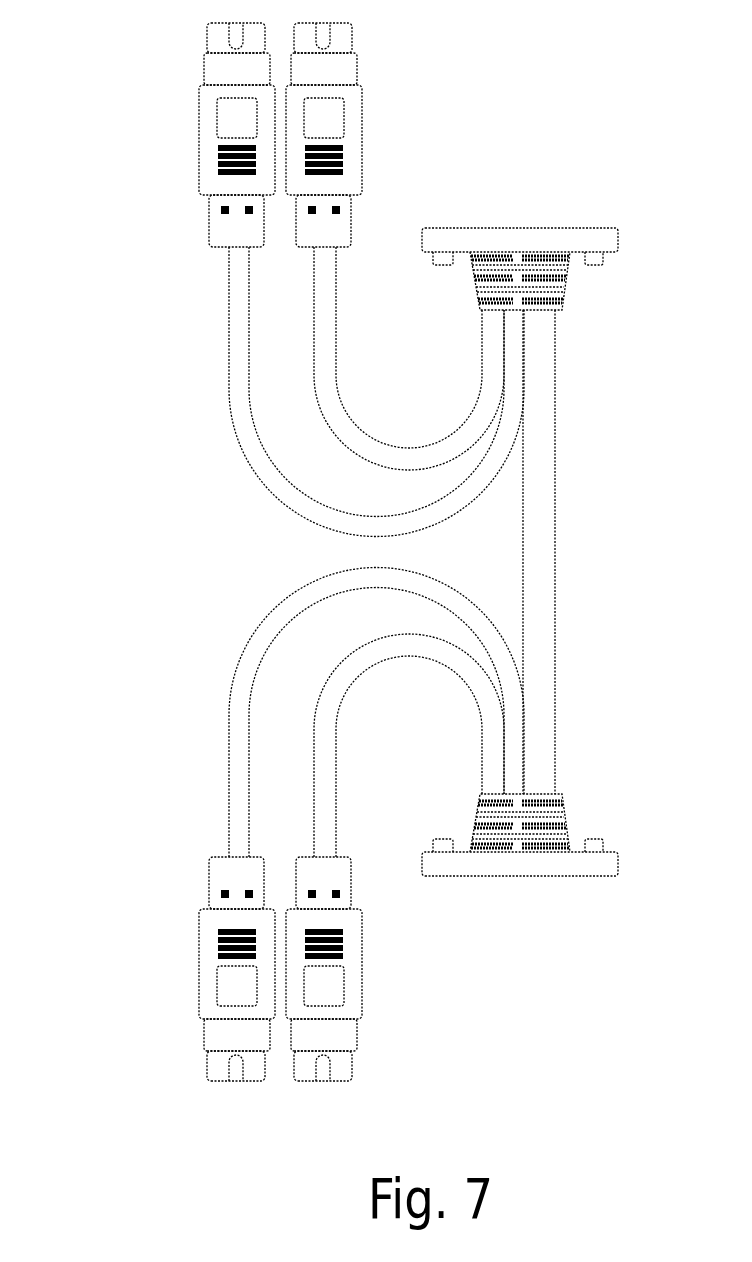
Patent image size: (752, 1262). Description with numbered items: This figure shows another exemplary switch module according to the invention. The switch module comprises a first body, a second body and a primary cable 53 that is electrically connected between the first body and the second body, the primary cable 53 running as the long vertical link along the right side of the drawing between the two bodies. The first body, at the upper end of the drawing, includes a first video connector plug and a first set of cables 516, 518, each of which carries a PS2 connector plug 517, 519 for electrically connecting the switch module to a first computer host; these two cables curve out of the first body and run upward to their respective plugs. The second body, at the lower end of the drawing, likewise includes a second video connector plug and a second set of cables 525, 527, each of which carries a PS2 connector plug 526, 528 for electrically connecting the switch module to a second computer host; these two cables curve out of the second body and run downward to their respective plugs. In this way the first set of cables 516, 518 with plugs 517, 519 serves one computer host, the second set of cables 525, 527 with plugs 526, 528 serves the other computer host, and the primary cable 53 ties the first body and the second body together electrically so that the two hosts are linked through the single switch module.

The primary cable 53 is at (530, 557).
The first set cable 516 is at (322, 372).
The PS2 connector plug 517 is at (362, 148).
The first set cable 518 is at (255, 465).
The PS2 connector plug 519 is at (217, 148).
The second set cable 525 is at (242, 703).
The PS2 connector plug 526 is at (217, 981).
The second set cable 527 is at (320, 809).
The PS2 connector plug 528 is at (358, 981).